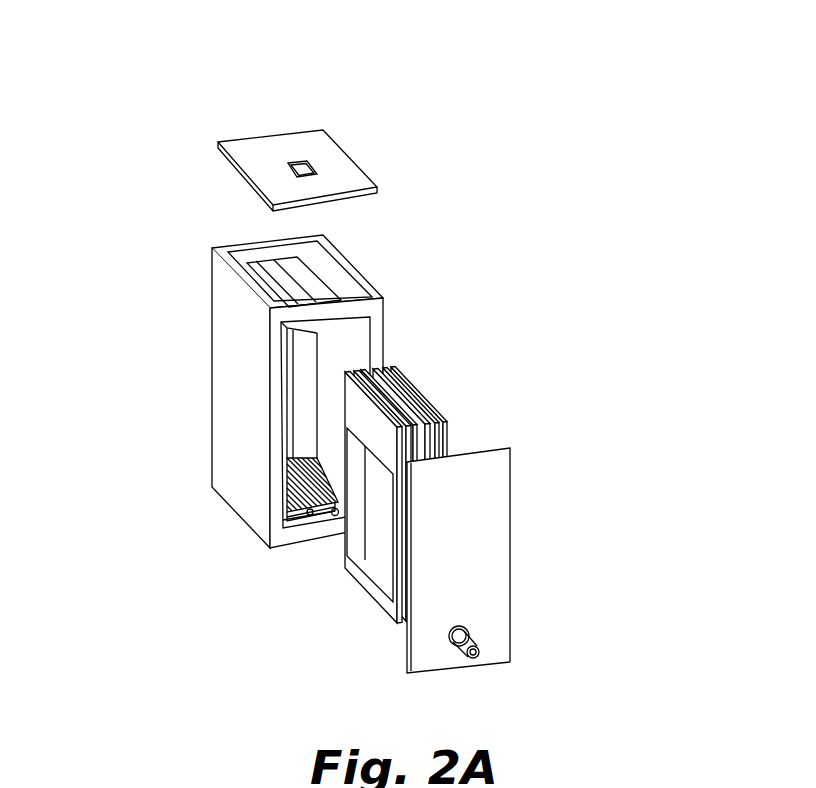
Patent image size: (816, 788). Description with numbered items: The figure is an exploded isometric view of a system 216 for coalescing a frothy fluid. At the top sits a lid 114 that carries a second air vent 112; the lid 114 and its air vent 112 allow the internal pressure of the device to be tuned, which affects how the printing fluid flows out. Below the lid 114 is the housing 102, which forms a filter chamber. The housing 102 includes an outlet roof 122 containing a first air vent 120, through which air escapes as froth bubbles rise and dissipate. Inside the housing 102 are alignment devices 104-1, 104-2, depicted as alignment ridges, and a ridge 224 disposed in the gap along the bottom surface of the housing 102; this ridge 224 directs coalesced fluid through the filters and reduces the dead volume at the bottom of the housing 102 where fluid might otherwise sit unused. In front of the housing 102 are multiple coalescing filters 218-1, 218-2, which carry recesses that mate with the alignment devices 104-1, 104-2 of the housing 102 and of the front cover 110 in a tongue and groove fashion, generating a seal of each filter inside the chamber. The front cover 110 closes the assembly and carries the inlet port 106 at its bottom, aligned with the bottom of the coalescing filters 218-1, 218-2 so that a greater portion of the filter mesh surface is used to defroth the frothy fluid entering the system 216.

The system for coalescing a frothy fluid 216 is at (150, 88).
The lid 114 is at (280, 159).
The second air vent 112 is at (293, 174).
The housing 102 is at (278, 418).
The first air vent 120 is at (272, 261).
The outlet roof 122 is at (300, 270).
The alignment device 104-1 is at (285, 498).
The ridge 224 is at (307, 513).
The alignment device 104-2 is at (336, 517).
The coalescing filter 218-1 is at (383, 598).
The coalescing filter 218-2 is at (446, 422).
The front cover 110 is at (429, 585).
The inlet port 106 is at (472, 658).